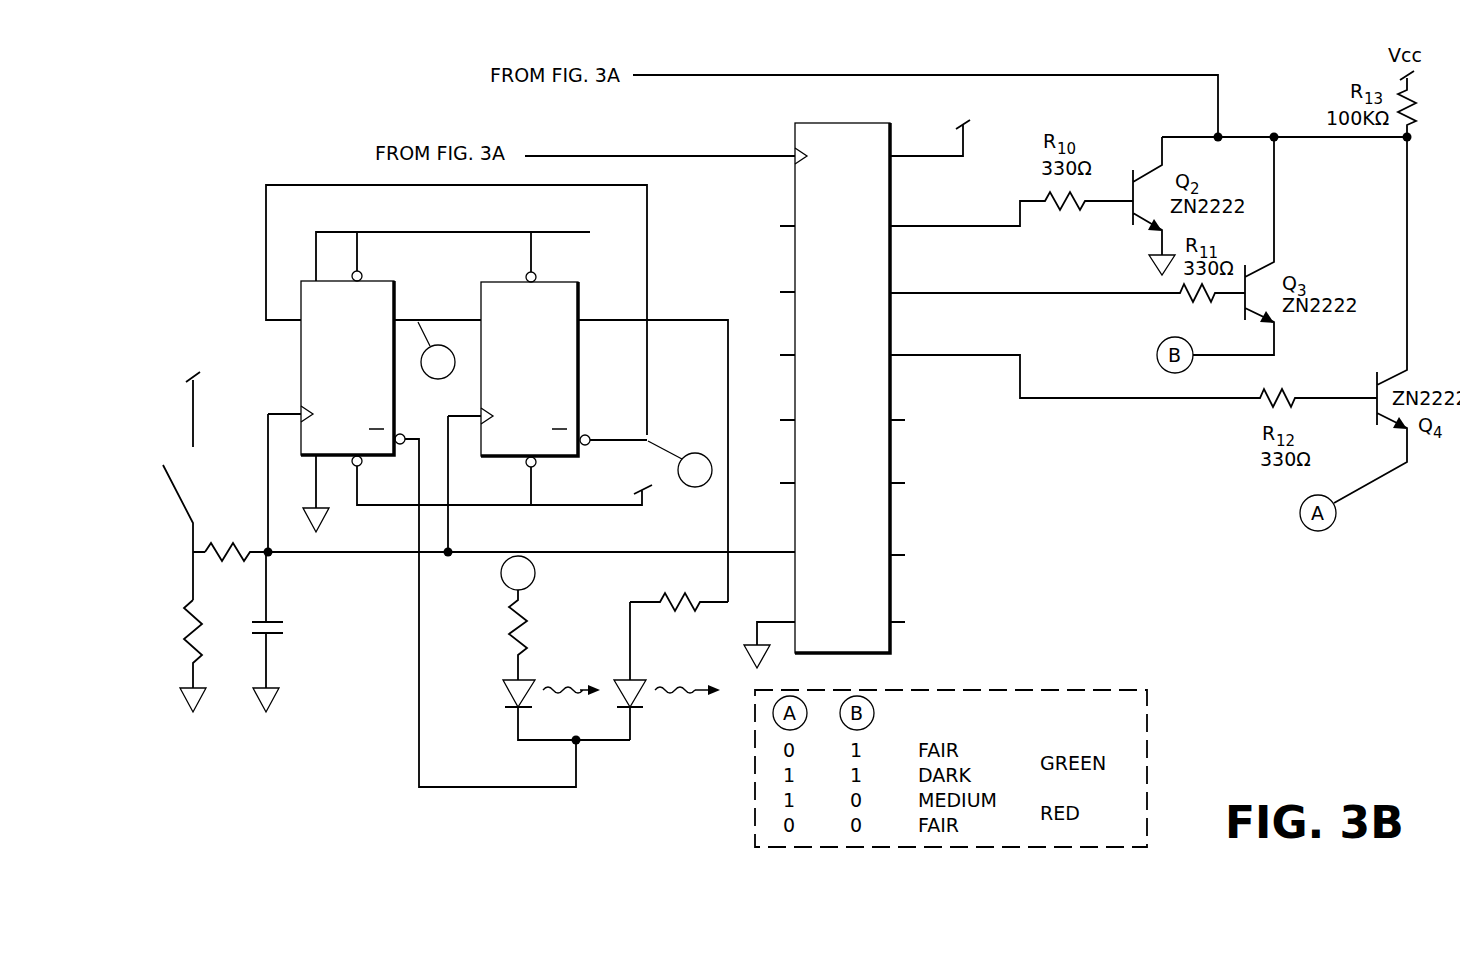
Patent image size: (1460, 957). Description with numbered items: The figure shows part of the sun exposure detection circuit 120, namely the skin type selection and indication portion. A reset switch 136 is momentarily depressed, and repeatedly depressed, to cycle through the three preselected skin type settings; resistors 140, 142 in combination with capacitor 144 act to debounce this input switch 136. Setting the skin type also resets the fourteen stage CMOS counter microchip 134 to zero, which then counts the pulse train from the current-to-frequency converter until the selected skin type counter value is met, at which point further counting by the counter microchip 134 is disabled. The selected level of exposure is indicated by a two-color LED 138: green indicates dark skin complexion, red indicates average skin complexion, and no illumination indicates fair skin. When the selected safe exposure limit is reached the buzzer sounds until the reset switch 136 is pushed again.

The circuit 120 is at (275, 778).
The reset switch 136 is at (214, 330).
The resistor 142 is at (240, 442).
The resistor 140 is at (171, 698).
The capacitor 144 is at (302, 694).
The two-color LED 138 is at (603, 780).
The counter microchip 134 is at (857, 518).